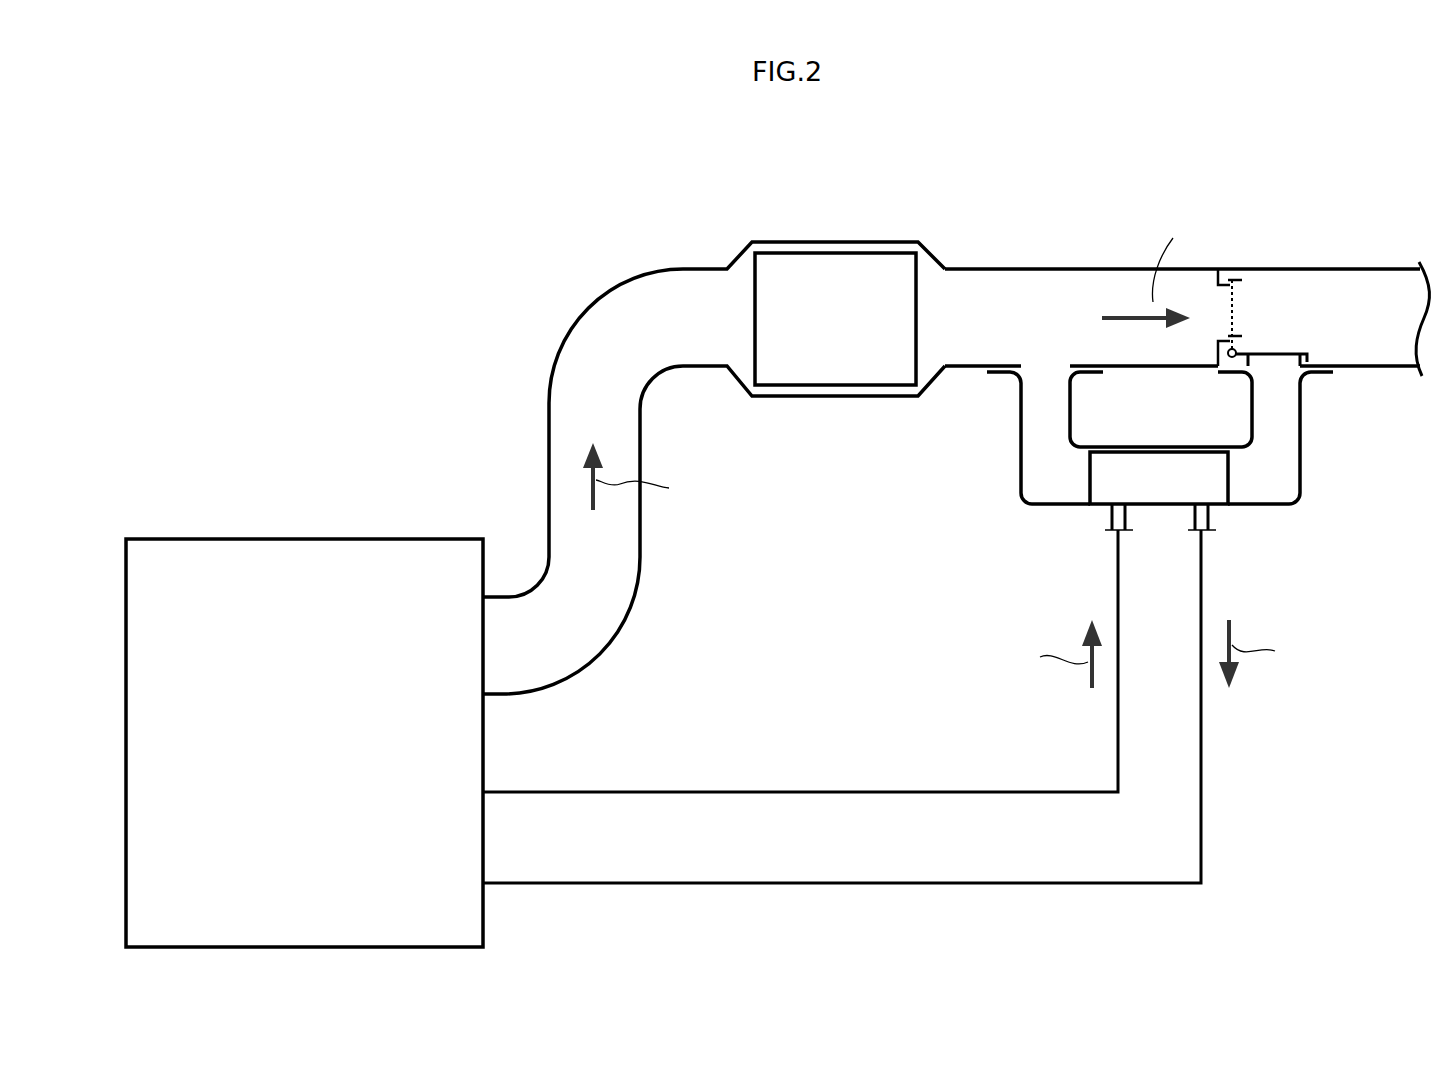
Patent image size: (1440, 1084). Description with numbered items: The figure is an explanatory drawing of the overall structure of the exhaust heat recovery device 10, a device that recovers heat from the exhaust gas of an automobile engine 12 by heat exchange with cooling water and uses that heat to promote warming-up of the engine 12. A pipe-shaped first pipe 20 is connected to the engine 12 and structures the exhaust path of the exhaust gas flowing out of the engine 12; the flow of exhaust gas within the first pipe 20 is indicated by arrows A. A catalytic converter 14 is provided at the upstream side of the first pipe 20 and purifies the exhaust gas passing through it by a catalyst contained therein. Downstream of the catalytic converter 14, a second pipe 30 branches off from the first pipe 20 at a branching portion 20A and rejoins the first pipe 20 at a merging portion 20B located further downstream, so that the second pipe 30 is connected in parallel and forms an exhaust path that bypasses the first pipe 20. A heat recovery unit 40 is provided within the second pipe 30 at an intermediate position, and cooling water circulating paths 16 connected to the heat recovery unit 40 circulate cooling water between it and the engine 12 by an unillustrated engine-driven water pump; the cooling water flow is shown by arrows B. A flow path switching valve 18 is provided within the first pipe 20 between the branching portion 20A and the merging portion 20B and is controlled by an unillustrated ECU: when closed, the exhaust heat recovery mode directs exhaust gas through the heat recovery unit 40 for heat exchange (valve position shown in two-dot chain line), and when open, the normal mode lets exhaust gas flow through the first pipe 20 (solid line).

The exhaust heat recovery device 10 is at (501, 258).
The engine 12 is at (291, 539).
The catalytic converter 14 is at (832, 277).
The cooling water circulating paths 16 is at (870, 883).
The flow path switching valve 18 is at (1232, 313).
The first pipe 20 is at (666, 262).
The branching portion 20A is at (1044, 300).
The merging portion 20B is at (1270, 307).
The second pipe 30 is at (1047, 513).
The heat recovery unit 40 is at (1230, 477).